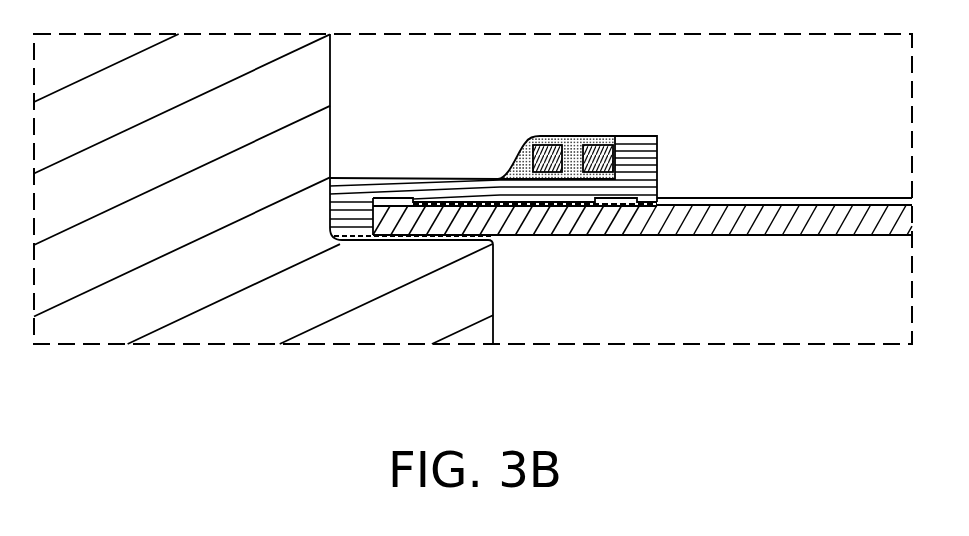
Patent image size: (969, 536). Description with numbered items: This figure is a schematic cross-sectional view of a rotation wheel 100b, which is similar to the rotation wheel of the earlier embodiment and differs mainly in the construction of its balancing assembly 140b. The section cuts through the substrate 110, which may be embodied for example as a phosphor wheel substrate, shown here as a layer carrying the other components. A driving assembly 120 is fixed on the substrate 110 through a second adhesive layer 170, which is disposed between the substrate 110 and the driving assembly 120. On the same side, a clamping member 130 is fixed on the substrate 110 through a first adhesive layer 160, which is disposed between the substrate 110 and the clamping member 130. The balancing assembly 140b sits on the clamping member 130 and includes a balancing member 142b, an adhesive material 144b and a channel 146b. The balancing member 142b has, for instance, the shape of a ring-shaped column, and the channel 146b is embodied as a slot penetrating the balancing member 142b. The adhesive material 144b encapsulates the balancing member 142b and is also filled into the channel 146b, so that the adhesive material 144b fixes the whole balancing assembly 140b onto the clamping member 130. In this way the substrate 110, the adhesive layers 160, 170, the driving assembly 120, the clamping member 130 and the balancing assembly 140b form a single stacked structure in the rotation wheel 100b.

The rotation wheel 100b is at (473, 229).
The substrate 110 is at (668, 223).
The driving assembly 120 is at (302, 322).
The clamping member 130 is at (657, 163).
The balancing assembly 140b is at (571, 109).
The balancing member 142b is at (621, 132).
The adhesive material 144b is at (512, 146).
The channel 146b is at (567, 156).
The first adhesive layer 160 is at (576, 206).
The second adhesive layer 170 is at (500, 242).